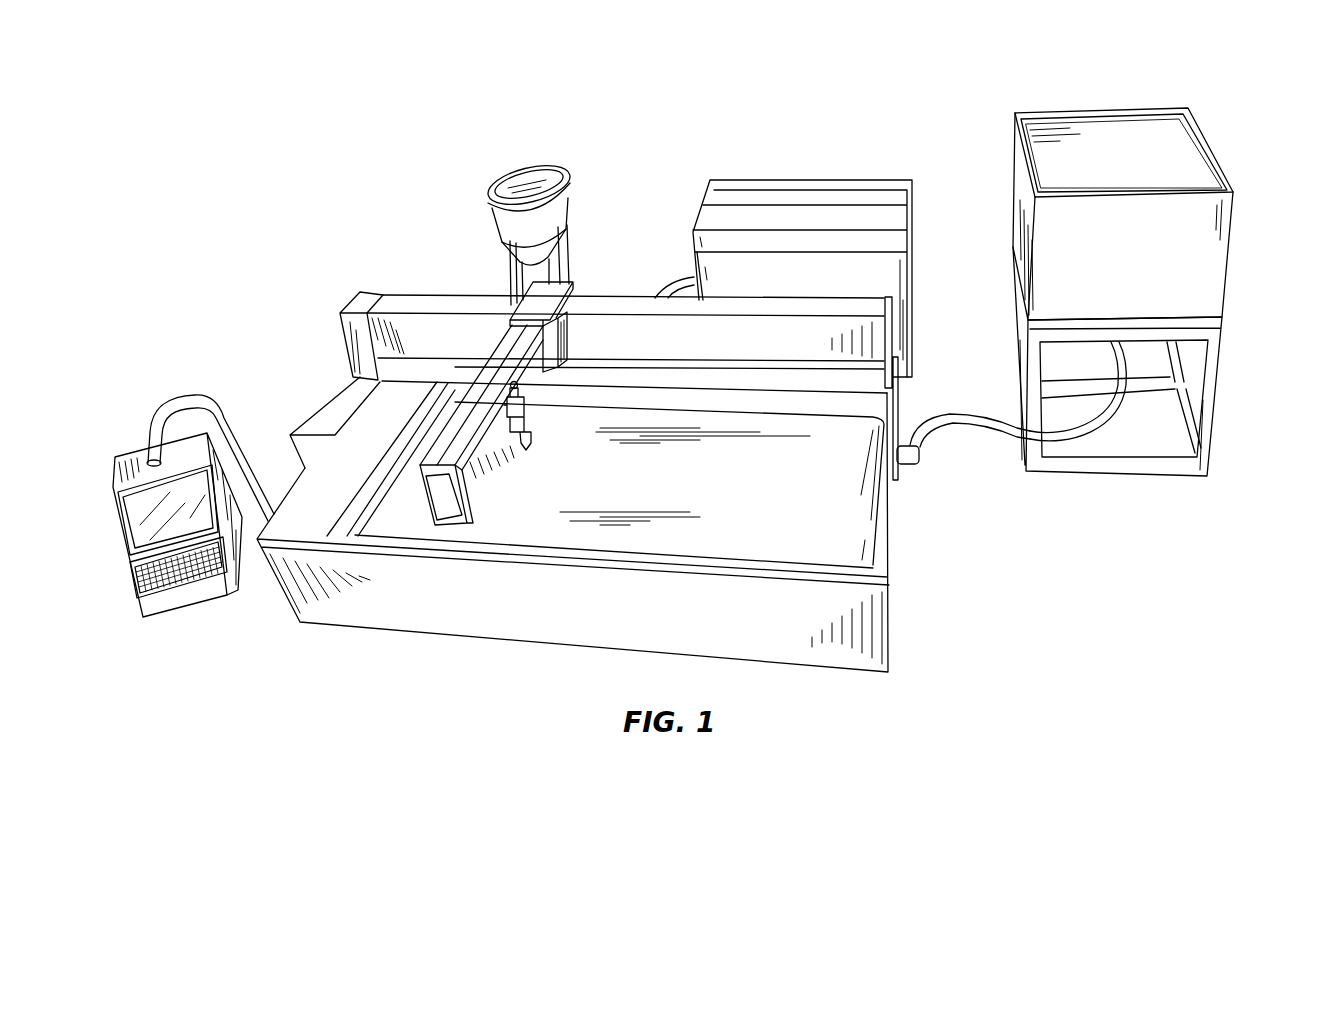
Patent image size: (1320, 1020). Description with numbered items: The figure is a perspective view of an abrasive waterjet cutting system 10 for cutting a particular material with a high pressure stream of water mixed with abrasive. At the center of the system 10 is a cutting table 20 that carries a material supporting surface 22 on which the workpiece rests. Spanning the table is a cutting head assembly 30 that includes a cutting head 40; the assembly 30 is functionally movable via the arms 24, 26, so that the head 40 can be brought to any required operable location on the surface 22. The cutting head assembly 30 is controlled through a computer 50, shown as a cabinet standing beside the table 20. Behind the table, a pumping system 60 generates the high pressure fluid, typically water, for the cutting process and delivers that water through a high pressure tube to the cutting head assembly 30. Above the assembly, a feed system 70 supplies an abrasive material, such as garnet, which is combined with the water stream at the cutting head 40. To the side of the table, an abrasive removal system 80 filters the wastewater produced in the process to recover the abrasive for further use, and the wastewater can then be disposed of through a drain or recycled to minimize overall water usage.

The abrasive waterjet cutting system 10 is at (757, 78).
The cutting table 20 is at (793, 665).
The material supporting surface 22 is at (830, 533).
The arm 24 is at (512, 355).
The arm 26 is at (625, 297).
The cutting head assembly 30 is at (500, 376).
The cutting head 40 is at (506, 422).
The computer 50 is at (197, 593).
The pumping system 60 is at (800, 193).
The feed system 70 is at (518, 176).
The abrasive removal system 80 is at (1203, 273).